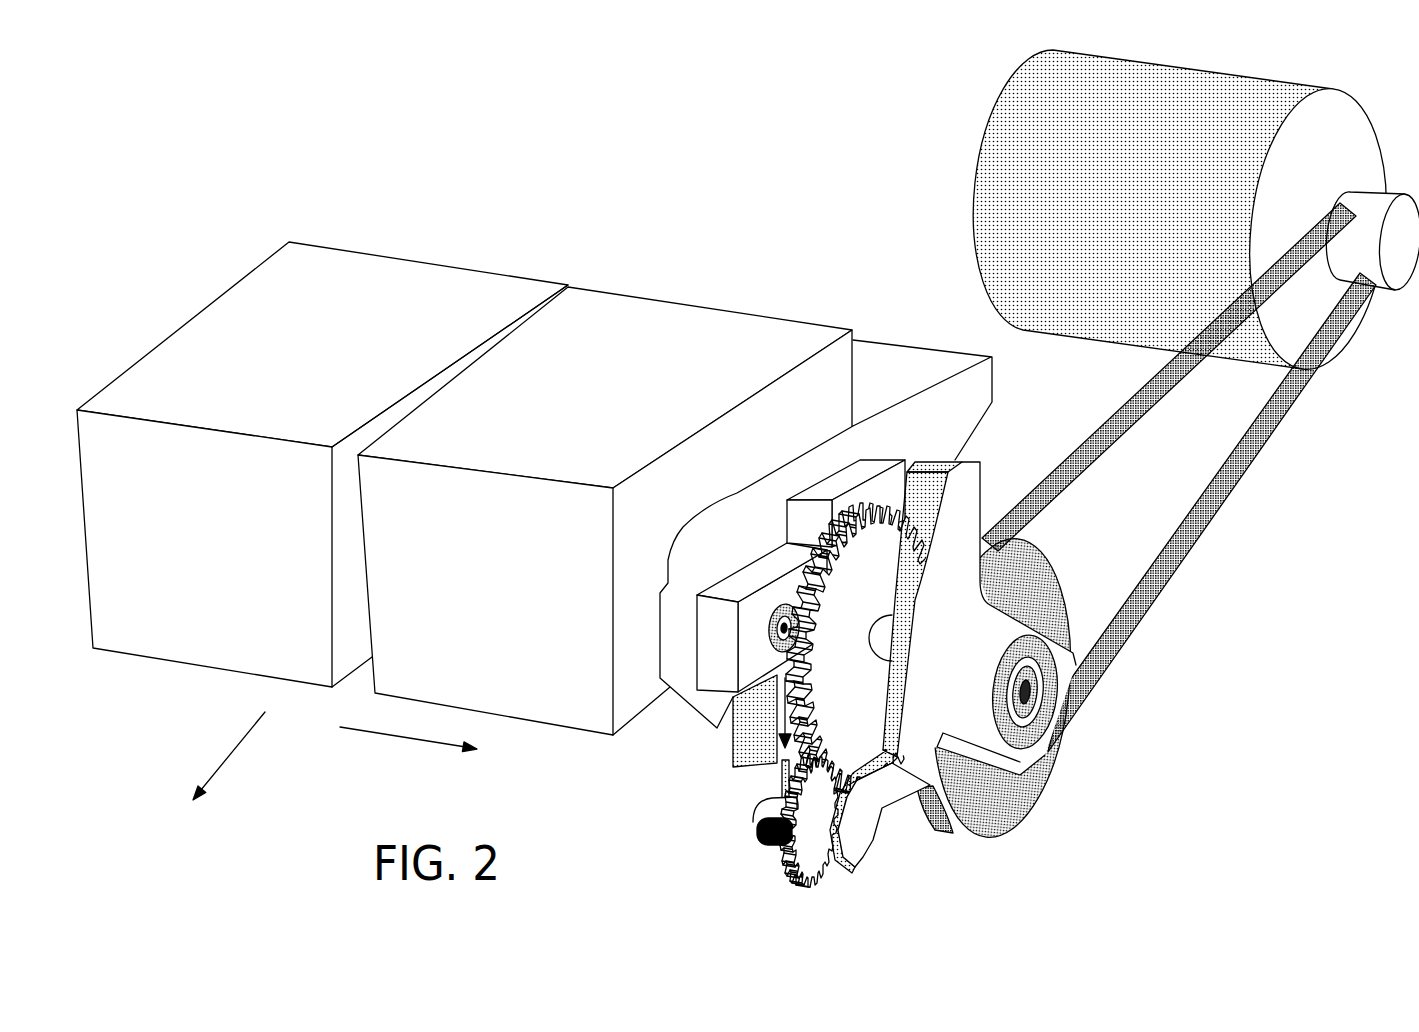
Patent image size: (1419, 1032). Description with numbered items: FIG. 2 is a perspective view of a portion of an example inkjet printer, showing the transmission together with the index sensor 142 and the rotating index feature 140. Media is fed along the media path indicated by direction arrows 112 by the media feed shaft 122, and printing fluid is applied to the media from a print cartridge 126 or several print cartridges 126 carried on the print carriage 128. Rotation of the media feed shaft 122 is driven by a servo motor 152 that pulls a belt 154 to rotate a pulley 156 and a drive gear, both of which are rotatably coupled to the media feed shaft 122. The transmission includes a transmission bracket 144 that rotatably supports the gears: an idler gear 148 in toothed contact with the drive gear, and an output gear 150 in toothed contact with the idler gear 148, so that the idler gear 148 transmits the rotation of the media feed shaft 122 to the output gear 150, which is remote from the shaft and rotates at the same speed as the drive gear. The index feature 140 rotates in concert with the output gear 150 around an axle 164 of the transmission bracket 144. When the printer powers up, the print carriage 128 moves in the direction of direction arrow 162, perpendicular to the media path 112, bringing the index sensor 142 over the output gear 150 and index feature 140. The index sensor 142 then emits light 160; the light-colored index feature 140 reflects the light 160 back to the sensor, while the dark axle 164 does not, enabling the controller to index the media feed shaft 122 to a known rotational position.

The direction arrows 112 is at (229, 759).
The media feed shaft 122 is at (1012, 688).
The print cartridge 126 is at (490, 281).
The print carriage 128 is at (985, 396).
The index feature 140 is at (757, 817).
The index sensor 142 is at (780, 763).
The transmission bracket 144 is at (975, 483).
The idler gear 148 is at (892, 568).
The output gear 150 is at (848, 877).
The servo motor 152 is at (993, 168).
The belt 154 is at (1172, 575).
The pulley 156 is at (1046, 562).
The light 160 is at (760, 787).
The direction arrow 162 is at (393, 736).
The axle 164 is at (778, 846).